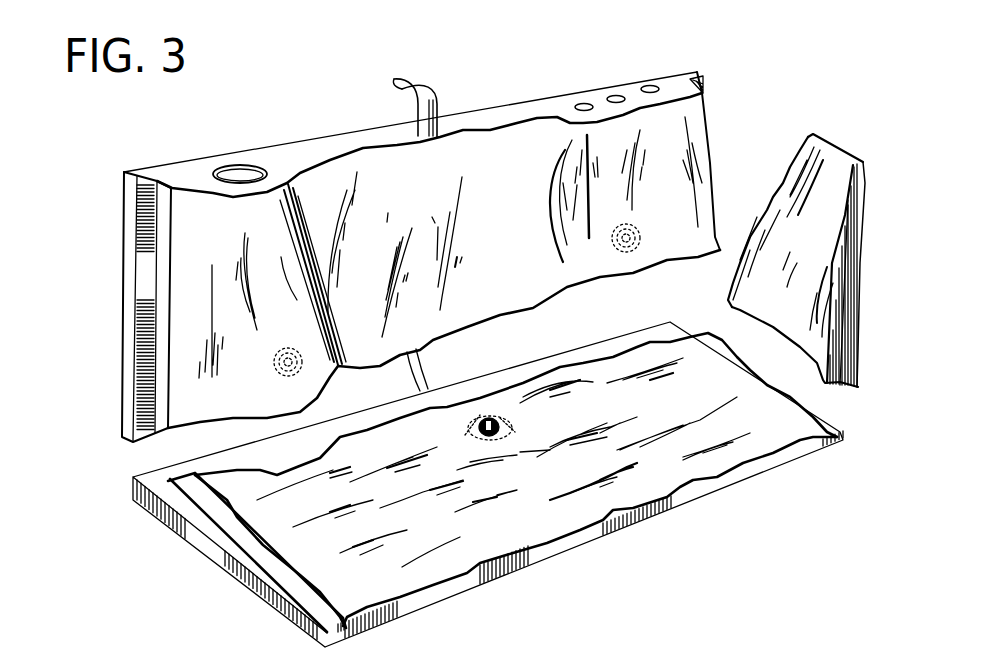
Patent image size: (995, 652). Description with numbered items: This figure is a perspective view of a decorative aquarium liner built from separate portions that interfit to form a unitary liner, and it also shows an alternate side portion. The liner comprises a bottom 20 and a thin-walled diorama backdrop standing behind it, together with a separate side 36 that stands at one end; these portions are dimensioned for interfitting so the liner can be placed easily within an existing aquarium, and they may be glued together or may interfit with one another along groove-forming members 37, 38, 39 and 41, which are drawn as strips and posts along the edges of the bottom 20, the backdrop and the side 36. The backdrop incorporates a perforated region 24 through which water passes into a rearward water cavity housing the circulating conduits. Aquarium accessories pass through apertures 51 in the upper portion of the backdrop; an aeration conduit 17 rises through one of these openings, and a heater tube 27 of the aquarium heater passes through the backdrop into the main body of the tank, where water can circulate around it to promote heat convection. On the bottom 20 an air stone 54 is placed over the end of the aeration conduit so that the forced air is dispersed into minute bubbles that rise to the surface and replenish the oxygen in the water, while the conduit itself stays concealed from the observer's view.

The aeration conduit 17 is at (427, 90).
The bottom 20 is at (685, 473).
The perforated region 24 is at (630, 250).
The heater tube 27 is at (490, 123).
The side 36 is at (833, 173).
The groove-forming member 37 is at (224, 539).
The groove-forming member 38 is at (137, 323).
The groove-forming member 39 is at (703, 84).
The groove-forming member 41 is at (838, 388).
The apertures 51 is at (240, 172).
The air stone 54 is at (515, 424).